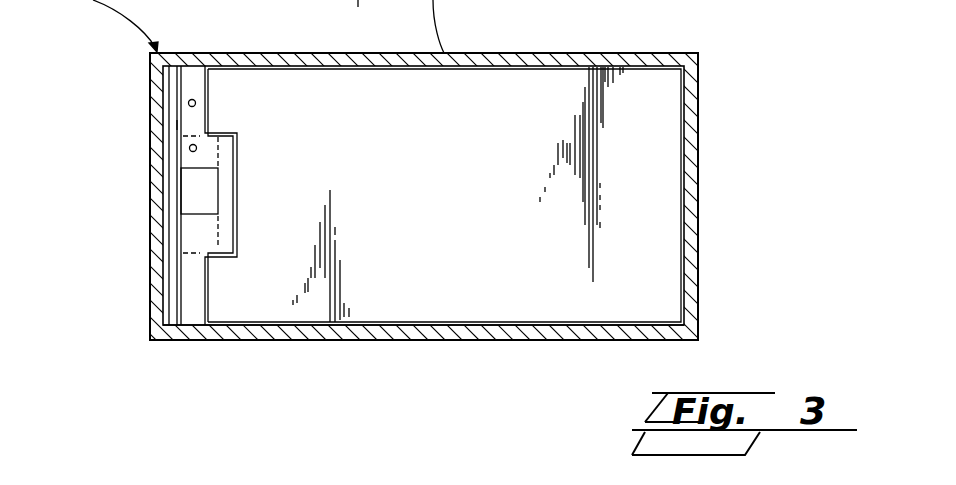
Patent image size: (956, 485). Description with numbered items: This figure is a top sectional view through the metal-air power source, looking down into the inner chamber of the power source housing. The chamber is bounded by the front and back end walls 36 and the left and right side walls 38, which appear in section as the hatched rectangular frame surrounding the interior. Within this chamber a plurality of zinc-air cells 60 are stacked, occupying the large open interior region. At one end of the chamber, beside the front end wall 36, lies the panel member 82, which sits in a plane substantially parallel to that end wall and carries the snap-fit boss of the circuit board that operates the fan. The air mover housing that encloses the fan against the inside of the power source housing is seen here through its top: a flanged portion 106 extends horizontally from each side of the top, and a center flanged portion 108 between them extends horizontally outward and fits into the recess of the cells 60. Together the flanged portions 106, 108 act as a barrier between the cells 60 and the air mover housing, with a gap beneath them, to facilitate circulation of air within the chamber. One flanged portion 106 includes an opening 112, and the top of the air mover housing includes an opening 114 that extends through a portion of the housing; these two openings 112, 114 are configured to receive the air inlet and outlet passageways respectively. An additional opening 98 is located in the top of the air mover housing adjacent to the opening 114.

The front and back end walls 36 is at (152, 238).
The left and right side walls 38 is at (400, 342).
The zinc-air cells 60 is at (455, 192).
The panel member 82 is at (175, 125).
The opening 98 is at (190, 185).
The flanged portion 106 is at (195, 80).
The center flanged portion 108 is at (227, 182).
The opening 112 is at (196, 100).
The opening 114 is at (194, 144).